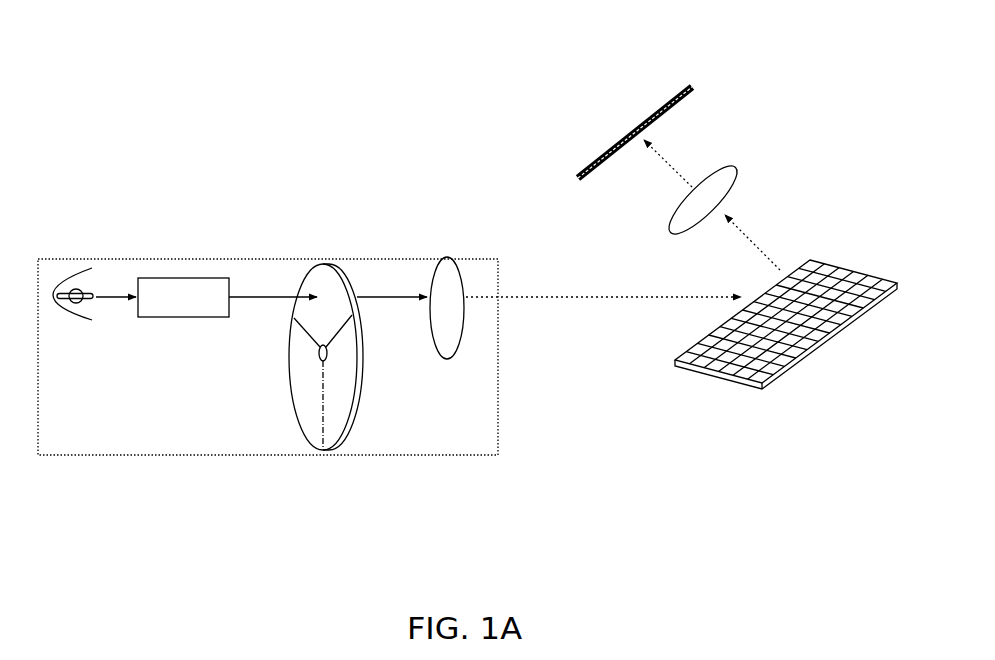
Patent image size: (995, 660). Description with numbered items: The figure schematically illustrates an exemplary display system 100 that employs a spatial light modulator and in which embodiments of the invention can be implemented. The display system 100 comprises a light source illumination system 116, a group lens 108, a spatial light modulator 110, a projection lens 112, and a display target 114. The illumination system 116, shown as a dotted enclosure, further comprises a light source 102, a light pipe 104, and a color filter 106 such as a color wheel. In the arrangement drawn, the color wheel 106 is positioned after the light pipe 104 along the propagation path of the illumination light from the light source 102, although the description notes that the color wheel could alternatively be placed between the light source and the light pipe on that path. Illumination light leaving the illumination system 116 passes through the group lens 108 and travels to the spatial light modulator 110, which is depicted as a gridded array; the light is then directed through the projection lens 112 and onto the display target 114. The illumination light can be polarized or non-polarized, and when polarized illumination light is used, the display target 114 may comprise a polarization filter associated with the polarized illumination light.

The display system 100 is at (334, 166).
The light source 102 is at (66, 262).
The light pipe 104 is at (185, 277).
The color filter 106 is at (332, 263).
The group lens 108 is at (453, 245).
The spatial light modulator 110 is at (823, 255).
The projection lens 112 is at (733, 167).
The display target 114 is at (663, 90).
The light source illumination system 116 is at (205, 455).